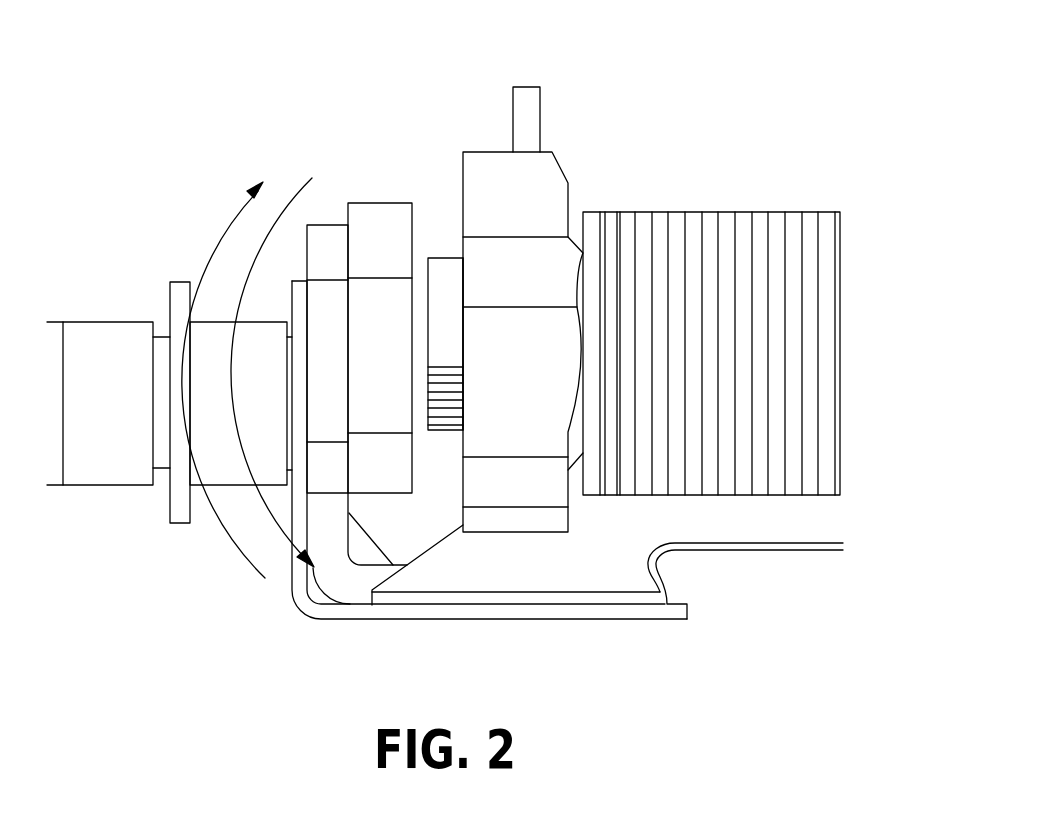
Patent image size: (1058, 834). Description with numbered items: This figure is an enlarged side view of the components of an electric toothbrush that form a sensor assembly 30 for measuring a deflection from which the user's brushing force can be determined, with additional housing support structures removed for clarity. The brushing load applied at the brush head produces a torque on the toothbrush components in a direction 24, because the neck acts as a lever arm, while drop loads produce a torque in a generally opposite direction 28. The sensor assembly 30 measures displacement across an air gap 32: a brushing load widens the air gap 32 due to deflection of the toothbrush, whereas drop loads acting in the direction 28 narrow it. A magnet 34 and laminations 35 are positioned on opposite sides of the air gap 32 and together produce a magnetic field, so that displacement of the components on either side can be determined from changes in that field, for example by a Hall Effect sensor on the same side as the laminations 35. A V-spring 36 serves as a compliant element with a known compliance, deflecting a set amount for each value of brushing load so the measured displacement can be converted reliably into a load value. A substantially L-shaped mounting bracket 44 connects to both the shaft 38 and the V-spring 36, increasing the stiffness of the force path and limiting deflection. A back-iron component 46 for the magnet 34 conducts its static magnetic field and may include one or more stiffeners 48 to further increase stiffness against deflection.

The direction 24 is at (312, 178).
The direction 28 is at (222, 522).
The sensor assembly 30 is at (473, 108).
The air gap 32 is at (423, 240).
The magnet 34 is at (376, 203).
The laminations 35 is at (450, 285).
The V-spring 36 is at (678, 515).
The shaft 38 is at (91, 322).
The mounting bracket 44 is at (515, 612).
The back-iron component 46 is at (338, 588).
The stiffeners 48 is at (377, 538).